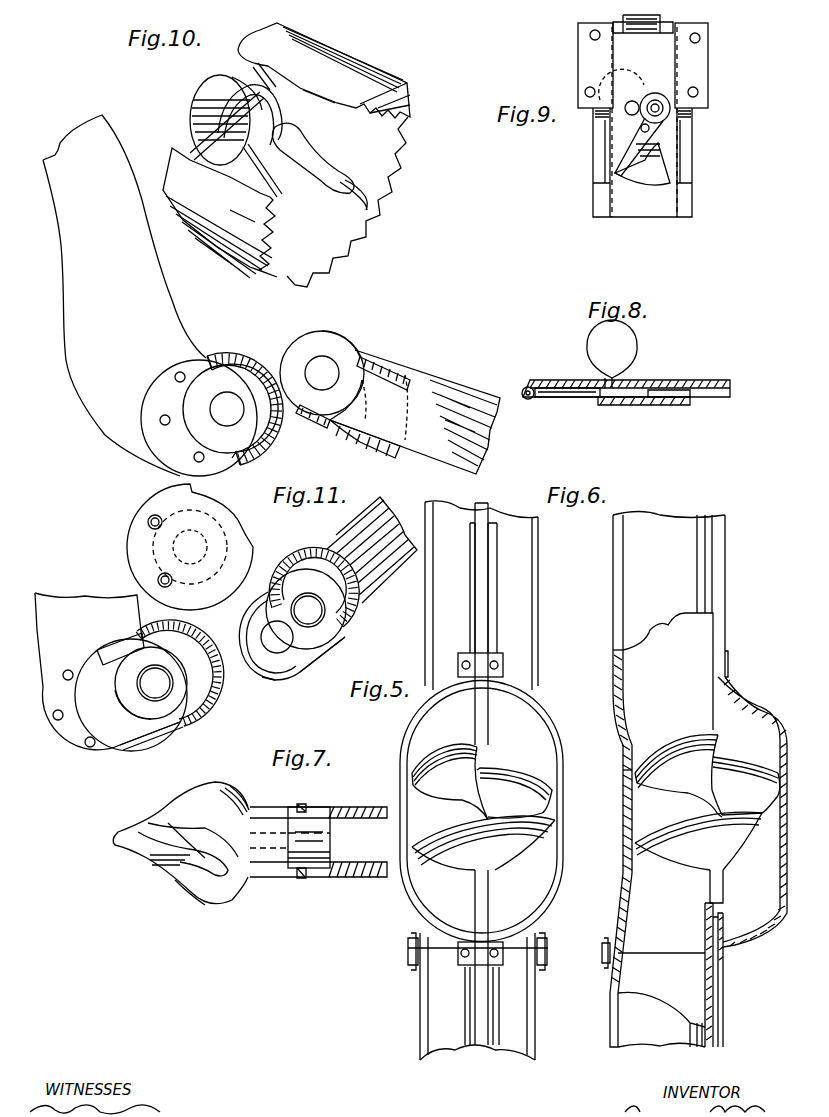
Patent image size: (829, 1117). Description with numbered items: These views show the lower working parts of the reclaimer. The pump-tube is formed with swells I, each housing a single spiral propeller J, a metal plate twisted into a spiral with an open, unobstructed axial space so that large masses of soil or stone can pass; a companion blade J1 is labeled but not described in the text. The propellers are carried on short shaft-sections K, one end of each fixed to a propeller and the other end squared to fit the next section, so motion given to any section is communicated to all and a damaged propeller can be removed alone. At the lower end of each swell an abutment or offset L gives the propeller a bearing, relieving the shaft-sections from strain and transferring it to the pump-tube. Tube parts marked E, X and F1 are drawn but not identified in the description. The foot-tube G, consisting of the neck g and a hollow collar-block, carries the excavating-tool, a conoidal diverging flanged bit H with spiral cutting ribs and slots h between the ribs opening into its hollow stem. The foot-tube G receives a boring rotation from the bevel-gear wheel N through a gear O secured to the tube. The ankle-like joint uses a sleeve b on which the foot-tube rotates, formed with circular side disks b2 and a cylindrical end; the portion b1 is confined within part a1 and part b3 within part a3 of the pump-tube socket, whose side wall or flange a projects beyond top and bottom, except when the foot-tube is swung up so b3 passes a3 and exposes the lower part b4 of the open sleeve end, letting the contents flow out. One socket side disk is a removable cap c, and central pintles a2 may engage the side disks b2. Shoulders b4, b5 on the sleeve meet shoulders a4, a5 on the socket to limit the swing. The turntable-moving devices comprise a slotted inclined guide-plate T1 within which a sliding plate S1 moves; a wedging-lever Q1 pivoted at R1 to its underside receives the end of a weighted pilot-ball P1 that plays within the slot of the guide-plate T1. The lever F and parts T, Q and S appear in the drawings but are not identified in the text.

In FIG. 10, the lever F is at (124, 288).
In FIG. 10, the side wall or flange a is at (199, 425).
In FIG. 10, the socket part a1 is at (178, 374).
In FIG. 11, the socket part a1 is at (111, 672).
In FIG. 10, the central pintles a2 is at (227, 409).
In FIG. 11, the central pintles a2 is at (169, 673).
In FIG. 10, the socket part a3 is at (227, 420).
In FIG. 11, the socket part a3 is at (132, 713).
In FIG. 10, the shoulder a4 is at (212, 347).
In FIG. 11, the shoulder a4 is at (89, 629).
In FIG. 10, the shoulder a5 is at (252, 462).
In FIG. 11, the shoulder a5 is at (151, 736).
In FIG. 10, the bevel-gear wheel N is at (245, 400).
In FIG. 10, the gear O is at (390, 397).
In FIG. 10, the sleeve b is at (376, 356).
In FIG. 11, the sleeve b is at (364, 550).
In FIG. 11, the sleeve portion b1 is at (288, 636).
In FIG. 10, the circular side disks b2 is at (322, 339).
In FIG. 11, the circular side disks b2 is at (302, 601).
In FIG. 10, the sleeve part b3 is at (365, 439).
In FIG. 11, the sleeve part b3 is at (303, 658).
In FIG. 10, the lower part of open sleeve end b4 is at (322, 353).
In FIG. 10, the shoulder b5 is at (311, 420).
In FIG. 10, the foot-tube G is at (463, 409).
In FIG. 9, the frame plates T is at (655, 61).
In FIG. 9, the channel Q is at (593, 162).
In FIG. 9, the dashed arc S is at (600, 118).
In FIG. 9, the sliding plate S1 is at (642, 117).
In FIG. 8, the sliding plate S1 is at (567, 403).
In FIG. 9, the pivot R1 is at (665, 153).
In FIG. 8, the pivot R1 is at (644, 407).
In FIG. 8, the slotted inclined guide-plate T1 is at (626, 376).
In FIG. 8, the weighted pilot-ball P1 is at (625, 354).
In FIG. 8, the wedging-lever Q1 is at (672, 405).
In FIG. 5, the casing E is at (538, 670).
In FIG. 5, the shaft-sections K is at (418, 1000).
In FIG. 6, the shaft-sections K is at (787, 910).
In FIG. 5, the spiral propeller J is at (450, 782).
In FIG. 6, the spiral propeller J is at (678, 776).
In FIG. 5, the vane J1 is at (483, 810).
In FIG. 6, the vane J1 is at (707, 804).
In FIG. 6, the upper tube X is at (685, 621).
In FIG. 6, the swells I is at (694, 848).
In FIG. 6, the abutment or offset L is at (754, 948).
In FIG. 6, the wall F1 is at (622, 790).
In FIG. 7, the neck g is at (318, 832).
In FIG. 7, the excavating-tool H is at (181, 843).
In FIG. 7, the slots h is at (199, 896).
In FIG. 11, the cap c is at (190, 547).